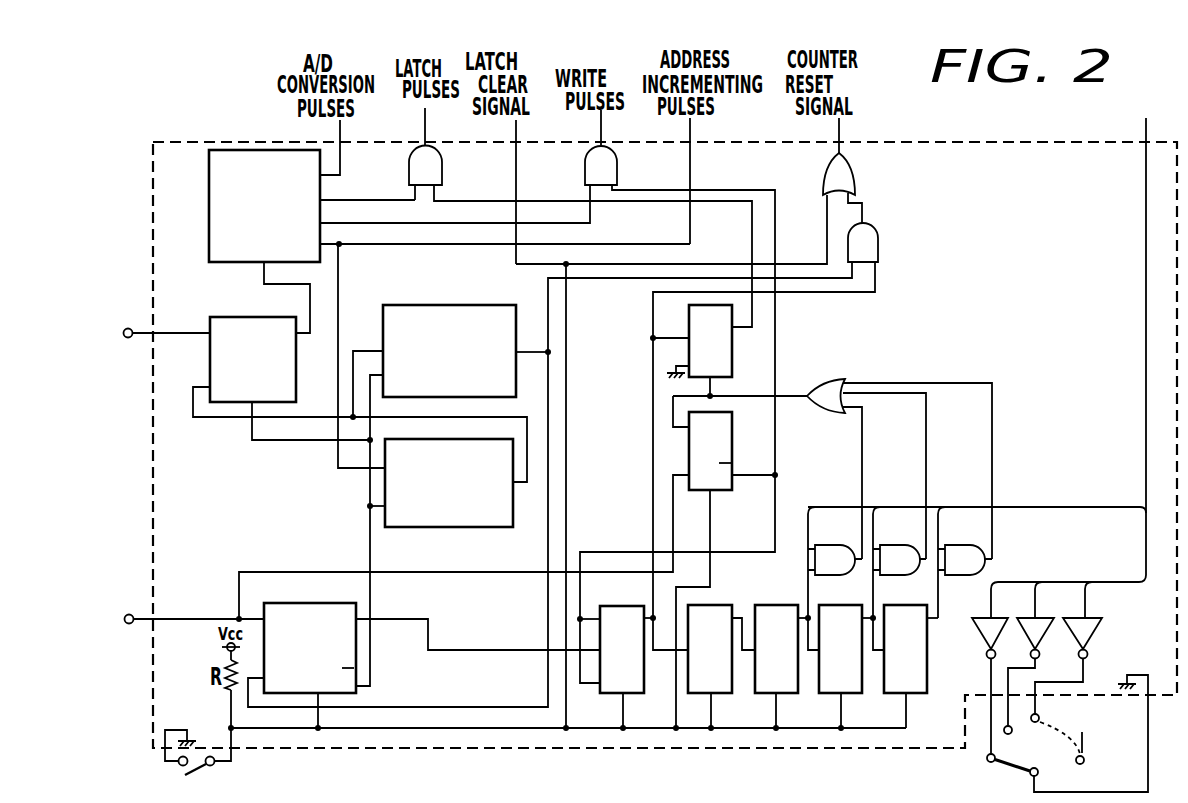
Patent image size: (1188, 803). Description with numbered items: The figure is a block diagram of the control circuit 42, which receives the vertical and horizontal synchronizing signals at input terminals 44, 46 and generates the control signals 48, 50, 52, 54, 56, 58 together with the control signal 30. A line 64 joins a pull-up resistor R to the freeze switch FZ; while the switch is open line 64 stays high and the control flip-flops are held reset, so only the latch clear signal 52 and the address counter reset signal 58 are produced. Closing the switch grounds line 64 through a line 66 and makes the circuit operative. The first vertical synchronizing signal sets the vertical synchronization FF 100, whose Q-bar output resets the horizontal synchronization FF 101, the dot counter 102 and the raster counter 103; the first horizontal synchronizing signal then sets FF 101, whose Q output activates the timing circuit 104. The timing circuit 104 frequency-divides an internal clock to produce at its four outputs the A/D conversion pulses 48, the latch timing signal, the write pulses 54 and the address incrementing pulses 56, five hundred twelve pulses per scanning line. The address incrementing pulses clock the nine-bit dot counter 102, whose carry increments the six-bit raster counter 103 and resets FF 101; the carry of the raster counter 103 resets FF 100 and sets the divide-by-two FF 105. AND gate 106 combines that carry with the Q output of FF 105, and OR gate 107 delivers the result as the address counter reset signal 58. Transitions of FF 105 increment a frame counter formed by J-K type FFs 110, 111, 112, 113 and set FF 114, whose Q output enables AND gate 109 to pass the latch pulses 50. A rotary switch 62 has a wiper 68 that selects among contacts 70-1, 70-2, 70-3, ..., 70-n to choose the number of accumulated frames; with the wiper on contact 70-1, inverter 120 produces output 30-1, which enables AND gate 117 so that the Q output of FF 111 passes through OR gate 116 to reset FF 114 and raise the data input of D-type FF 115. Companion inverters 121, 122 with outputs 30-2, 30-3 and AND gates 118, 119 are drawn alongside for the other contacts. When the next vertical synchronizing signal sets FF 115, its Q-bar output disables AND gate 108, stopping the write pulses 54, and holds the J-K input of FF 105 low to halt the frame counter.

The control signal 30 is at (1146, 133).
The inverter output 30-1 is at (809, 506).
The bus line branch 30-2 is at (874, 506).
The bus line branch 30-3 is at (939, 506).
The control circuit 42 is at (1175, 142).
The input terminal 44 is at (130, 614).
The input terminal 46 is at (129, 328).
The A/D conversion pulsed signal 48 is at (346, 126).
The latching pulses 50 is at (425, 129).
The latch clear signal 52 is at (520, 127).
The write timing pulsed signal 54 is at (601, 131).
The address incrementing pulsed signal 56 is at (696, 126).
The address counter reset signal 58 is at (846, 128).
The rotary switch 62 is at (1018, 781).
The line 64 is at (231, 760).
The line 66 is at (165, 762).
The wiper 68 is at (1038, 773).
The contact 70-1 is at (986, 758).
The contact 70-2 is at (1011, 734).
The contact 70-3 is at (1040, 717).
The contact 70-n is at (1085, 744).
The vertical synchronization FF 100 is at (318, 603).
The horizontal synchronization FF 101 is at (281, 318).
The dot counter 102 is at (443, 527).
The raster counter 103 is at (450, 305).
The timing circuit 104 is at (209, 229).
The divide-by-two frequency dividing FF 105 is at (623, 606).
The AND gate 106 is at (878, 243).
The OR gate 107 is at (855, 176).
The AND gate 108 is at (616, 167).
The AND gate 109 is at (441, 174).
The J-K type FF 110 is at (735, 598).
The J-K type FF 111 is at (780, 598).
The J-K type FF 112 is at (845, 598).
The J-K type FF 113 is at (907, 598).
The J-K type FF 114 is at (689, 322).
The D-type FF 115 is at (732, 437).
The OR gate 116 is at (827, 380).
The AND gate 117 is at (837, 546).
The AND gate 118 is at (902, 546).
The AND gate 119 is at (964, 546).
The inverter 120 is at (984, 634).
The inverting buffer 121 is at (1030, 633).
The inverting buffer 122 is at (1078, 632).